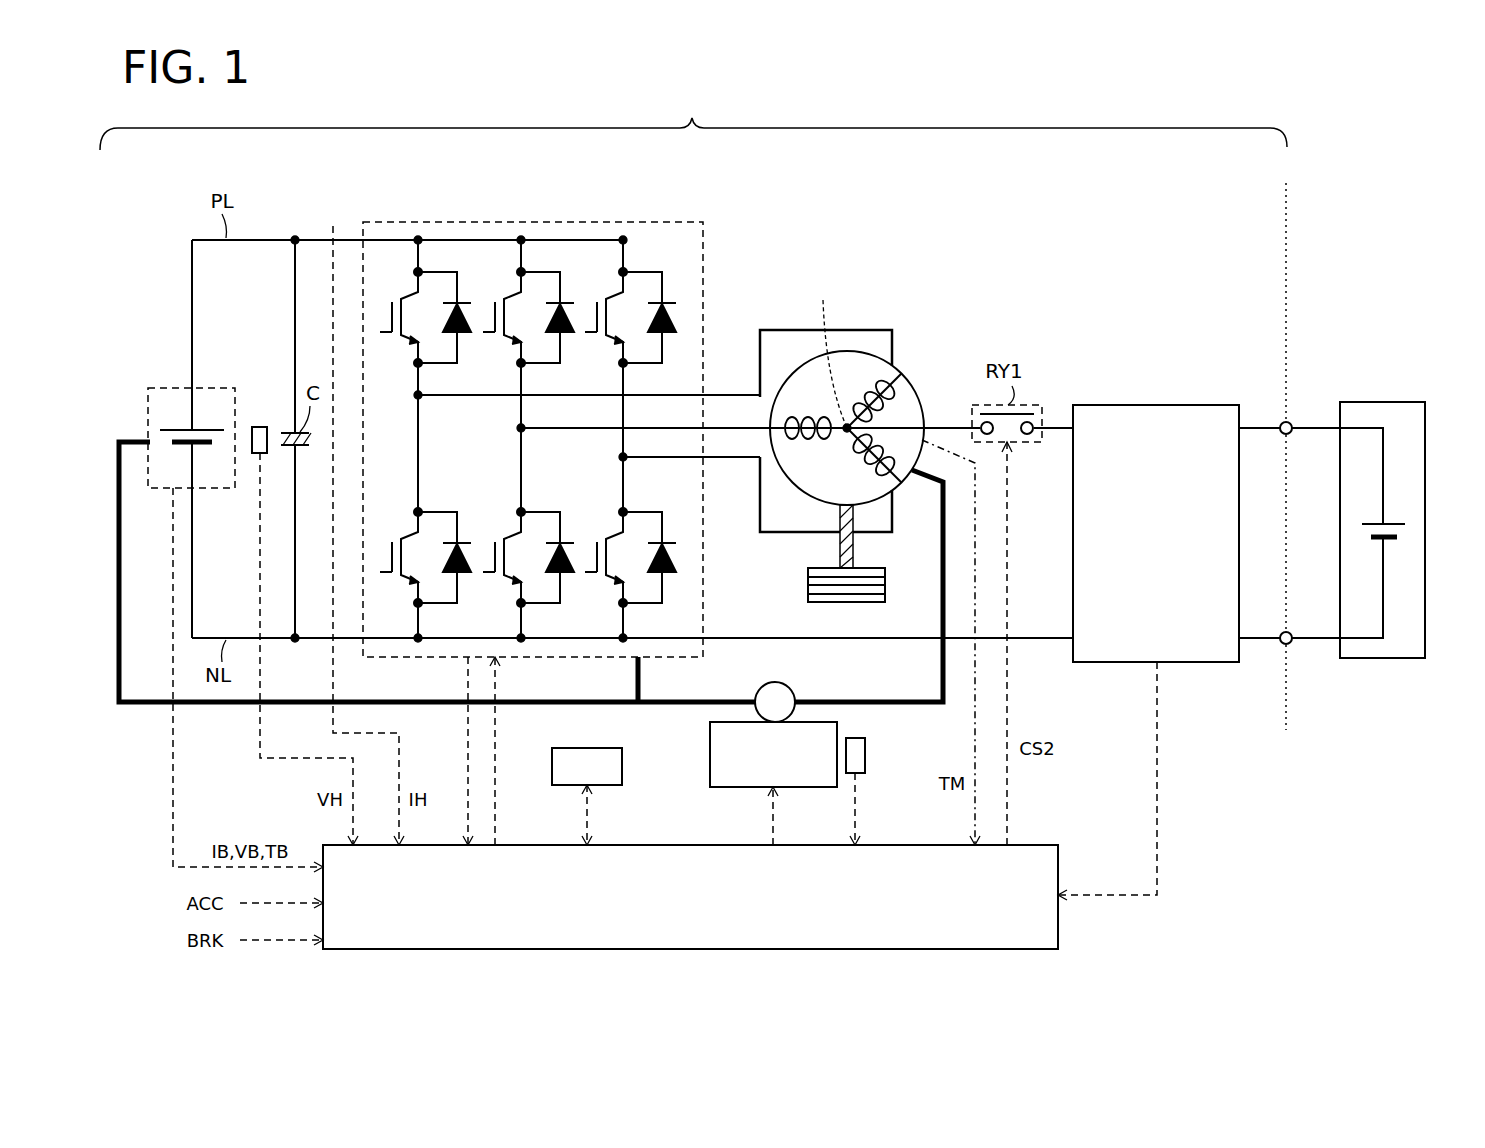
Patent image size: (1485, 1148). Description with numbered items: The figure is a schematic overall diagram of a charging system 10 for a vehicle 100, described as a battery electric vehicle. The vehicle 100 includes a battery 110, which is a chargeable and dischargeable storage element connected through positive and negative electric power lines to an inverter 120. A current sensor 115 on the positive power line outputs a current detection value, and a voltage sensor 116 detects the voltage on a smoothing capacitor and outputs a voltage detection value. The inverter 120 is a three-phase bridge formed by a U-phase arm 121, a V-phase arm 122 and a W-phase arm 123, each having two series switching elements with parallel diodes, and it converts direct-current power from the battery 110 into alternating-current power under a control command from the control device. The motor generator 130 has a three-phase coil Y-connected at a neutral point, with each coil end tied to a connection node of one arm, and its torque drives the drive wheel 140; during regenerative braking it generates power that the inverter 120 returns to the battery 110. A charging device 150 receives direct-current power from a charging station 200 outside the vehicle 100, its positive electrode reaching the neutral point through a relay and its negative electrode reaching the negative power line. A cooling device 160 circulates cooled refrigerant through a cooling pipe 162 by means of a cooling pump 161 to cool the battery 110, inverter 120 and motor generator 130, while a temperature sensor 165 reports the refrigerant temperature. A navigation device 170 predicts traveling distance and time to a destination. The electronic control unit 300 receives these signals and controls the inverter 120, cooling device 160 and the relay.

The charging system 10 is at (1415, 93).
The vehicle 100 is at (693, 120).
The battery 110 is at (174, 388).
The current sensor 115 is at (333, 262).
The voltage sensor 116 is at (256, 426).
The inverter 120 is at (533, 222).
The U-phase arm 121 is at (377, 405).
The V-phase arm 122 is at (475, 438).
The W-phase arm 123 is at (581, 467).
The motor generator 130 is at (905, 390).
The drive wheel 140 is at (847, 603).
The charging device 150 is at (1156, 405).
The cooling device 160 is at (710, 758).
The cooling pump 161 is at (790, 687).
The cooling pipe 162 is at (206, 704).
The temperature sensor 165 is at (865, 757).
The navigation device 170 is at (595, 748).
The charging station 200 is at (1425, 402).
The electronic control unit 300 is at (1062, 940).